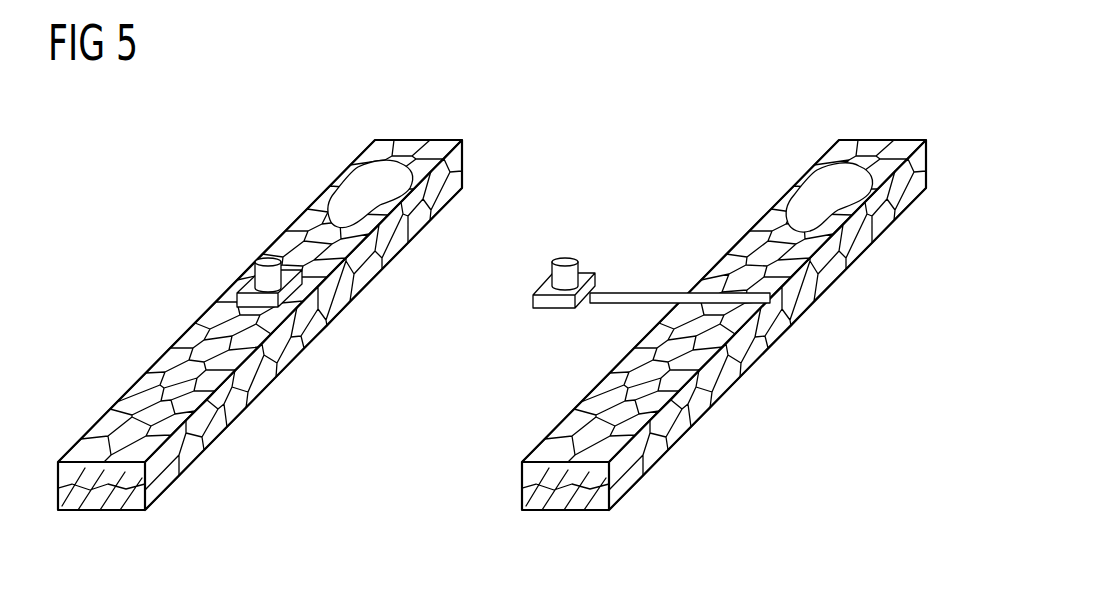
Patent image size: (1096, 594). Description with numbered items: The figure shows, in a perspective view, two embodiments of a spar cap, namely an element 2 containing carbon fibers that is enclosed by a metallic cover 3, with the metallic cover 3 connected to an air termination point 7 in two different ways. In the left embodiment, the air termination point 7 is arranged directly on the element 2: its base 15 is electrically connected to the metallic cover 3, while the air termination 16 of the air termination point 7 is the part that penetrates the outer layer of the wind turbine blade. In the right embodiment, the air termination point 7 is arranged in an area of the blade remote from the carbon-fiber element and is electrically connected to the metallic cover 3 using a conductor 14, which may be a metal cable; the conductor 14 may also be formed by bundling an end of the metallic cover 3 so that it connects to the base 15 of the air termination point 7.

The element containing carbon fibers 2 is at (380, 170).
The metallic cover 3 is at (418, 139).
The air termination point 7 is at (180, 248).
The conductor 14 is at (640, 292).
The base 15 is at (305, 287).
The air termination 16 is at (270, 258).